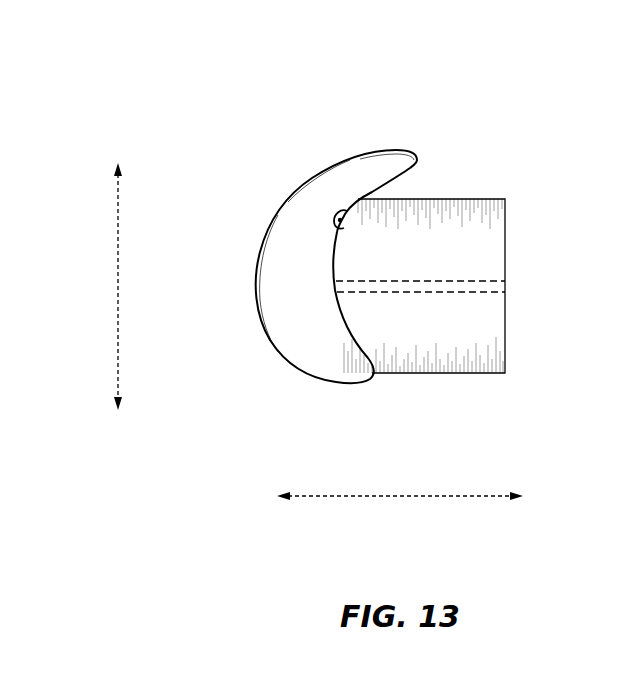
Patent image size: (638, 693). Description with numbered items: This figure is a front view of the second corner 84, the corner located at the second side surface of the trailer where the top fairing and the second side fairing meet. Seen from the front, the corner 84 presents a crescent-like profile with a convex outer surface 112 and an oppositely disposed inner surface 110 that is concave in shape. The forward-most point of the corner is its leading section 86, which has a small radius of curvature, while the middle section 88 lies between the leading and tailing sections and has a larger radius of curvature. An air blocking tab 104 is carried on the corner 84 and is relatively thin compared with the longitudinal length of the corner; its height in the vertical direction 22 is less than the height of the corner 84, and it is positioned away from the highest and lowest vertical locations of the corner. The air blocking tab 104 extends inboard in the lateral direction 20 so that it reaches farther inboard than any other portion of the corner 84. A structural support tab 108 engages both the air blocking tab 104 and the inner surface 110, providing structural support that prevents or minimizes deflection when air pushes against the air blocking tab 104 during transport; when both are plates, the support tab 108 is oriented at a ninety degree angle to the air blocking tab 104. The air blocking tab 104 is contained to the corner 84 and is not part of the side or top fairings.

The corner 84 is at (366, 128).
The inner surface 110 is at (392, 184).
The outer surface 112 is at (322, 193).
The middle section 88 is at (255, 263).
The leading section 86 is at (347, 217).
The structural support tab 108 is at (477, 285).
The air blocking tab 104 is at (452, 353).
The vertical direction 22 is at (117, 286).
The lateral direction 20 is at (400, 497).